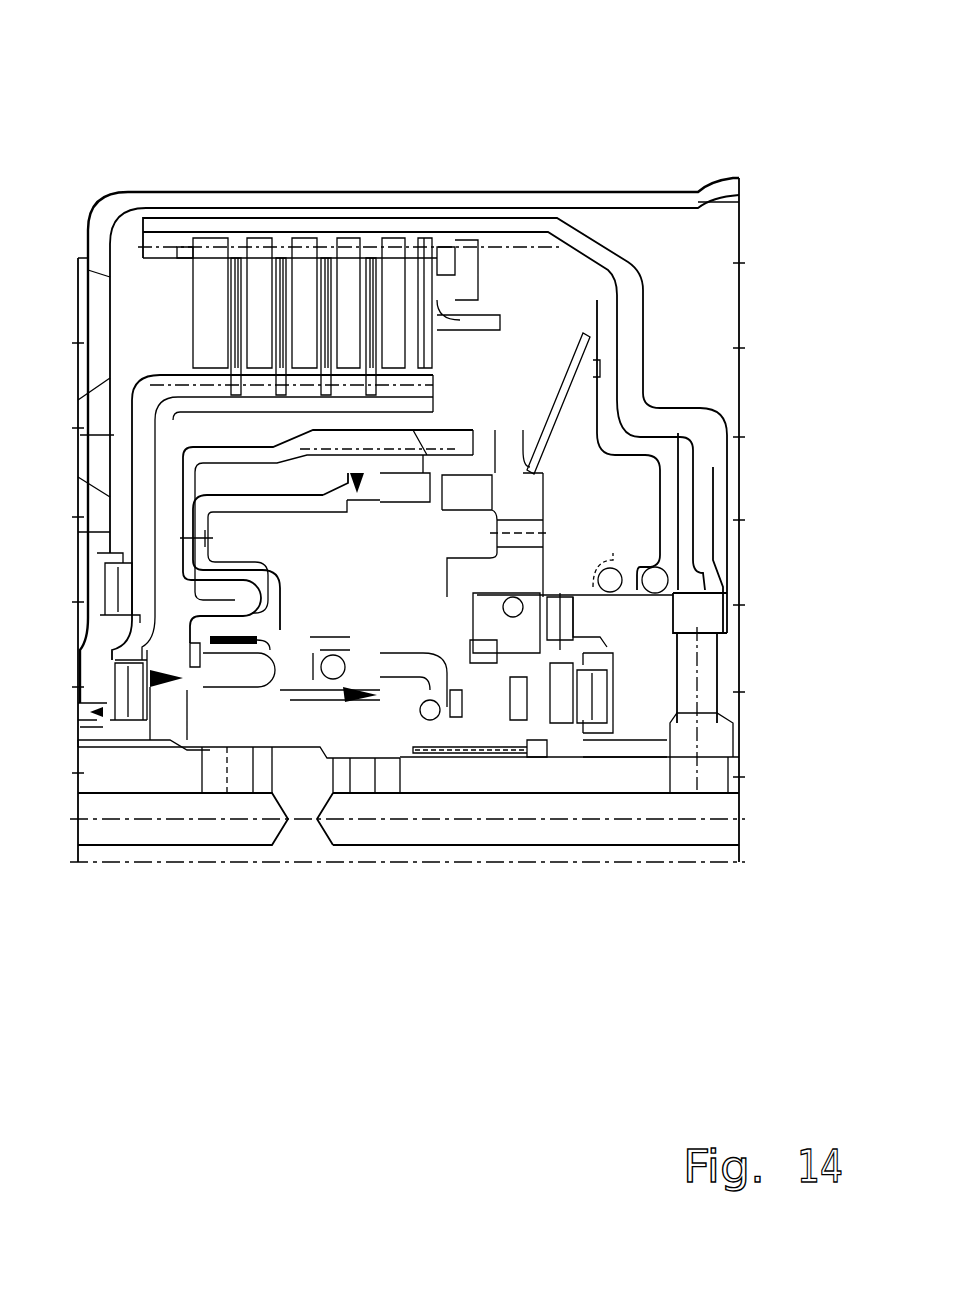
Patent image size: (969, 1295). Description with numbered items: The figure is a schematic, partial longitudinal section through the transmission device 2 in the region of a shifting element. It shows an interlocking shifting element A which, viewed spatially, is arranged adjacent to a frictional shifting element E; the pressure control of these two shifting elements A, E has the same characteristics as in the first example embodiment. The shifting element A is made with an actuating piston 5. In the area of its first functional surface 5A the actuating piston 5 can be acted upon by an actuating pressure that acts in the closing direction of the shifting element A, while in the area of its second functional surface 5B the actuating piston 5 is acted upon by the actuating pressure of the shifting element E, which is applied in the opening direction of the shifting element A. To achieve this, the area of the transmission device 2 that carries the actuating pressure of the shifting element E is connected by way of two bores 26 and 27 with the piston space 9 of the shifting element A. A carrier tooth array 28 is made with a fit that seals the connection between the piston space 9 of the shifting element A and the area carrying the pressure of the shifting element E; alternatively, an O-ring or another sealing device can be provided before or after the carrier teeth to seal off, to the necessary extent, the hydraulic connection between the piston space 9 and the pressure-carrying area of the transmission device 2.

The transmission device 2 is at (278, 143).
The frictional shifting element E is at (343, 290).
The actuating piston 5 is at (278, 620).
The interlocking shifting element A is at (376, 543).
The first functional surface 5A is at (205, 679).
The second functional surface 5B is at (372, 700).
The bore 26 is at (380, 712).
The piston space 9 is at (412, 712).
The bore 27 is at (465, 712).
The carrier tooth array 28 is at (520, 712).